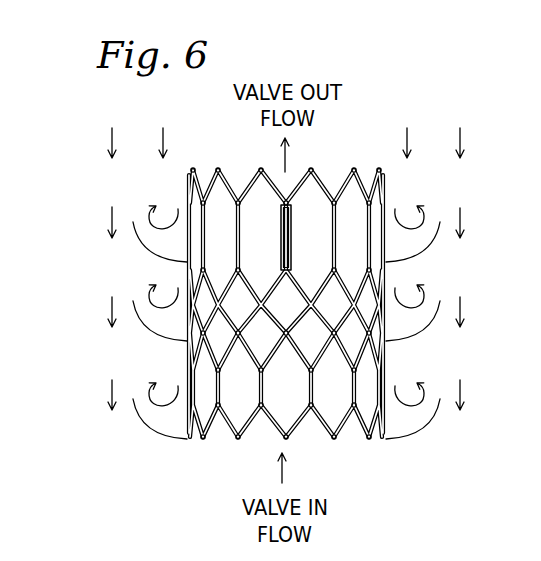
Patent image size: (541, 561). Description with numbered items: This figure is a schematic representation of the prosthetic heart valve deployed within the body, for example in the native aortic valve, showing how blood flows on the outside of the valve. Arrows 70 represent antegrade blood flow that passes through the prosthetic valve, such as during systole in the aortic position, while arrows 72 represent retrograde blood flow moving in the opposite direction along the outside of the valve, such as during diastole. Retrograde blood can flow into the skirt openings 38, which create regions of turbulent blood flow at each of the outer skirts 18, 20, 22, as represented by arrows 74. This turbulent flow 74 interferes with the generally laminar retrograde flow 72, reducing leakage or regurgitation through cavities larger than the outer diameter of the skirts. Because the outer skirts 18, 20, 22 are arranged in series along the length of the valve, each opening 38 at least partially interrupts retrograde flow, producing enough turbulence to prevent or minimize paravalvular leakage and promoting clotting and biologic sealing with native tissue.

The outer skirt 18 is at (148, 422).
The outer skirt 20 is at (158, 331).
The outer skirt 22 is at (385, 261).
The skirt openings 38 is at (410, 245).
The arrows representing antegrade blood flow 70 is at (287, 152).
The arrows representing retrograde blood flow 72 is at (112, 140).
The arrows representing turbulent flow 74 is at (153, 209).